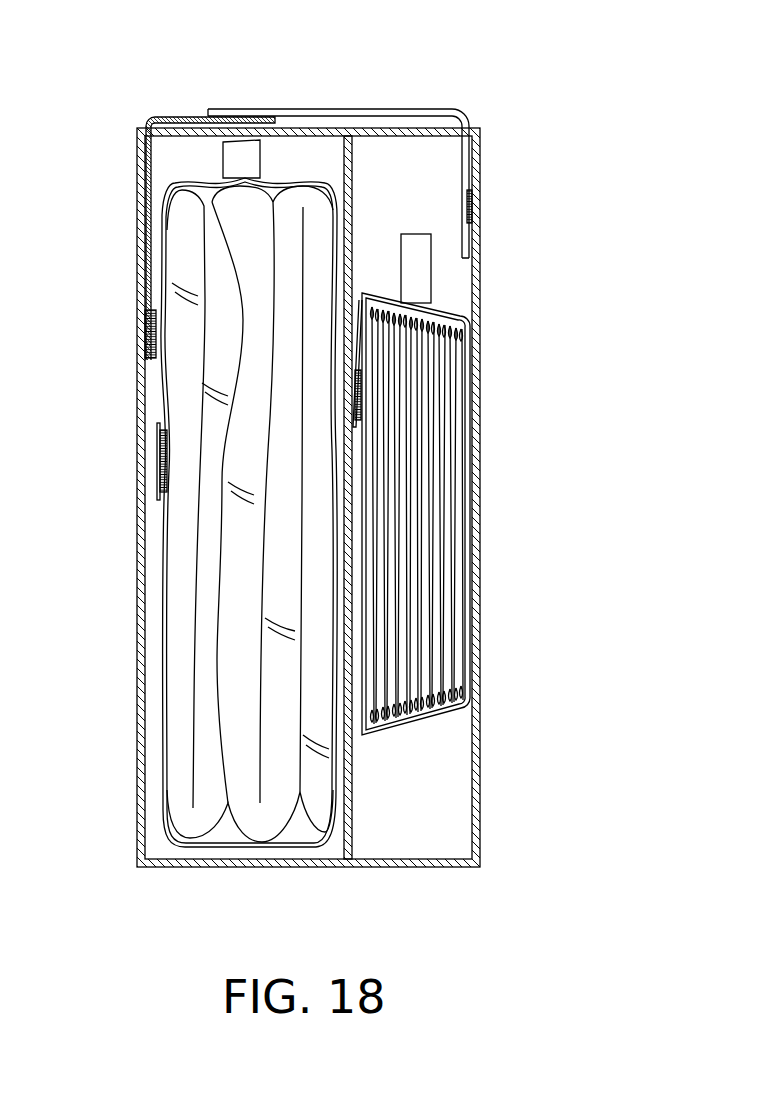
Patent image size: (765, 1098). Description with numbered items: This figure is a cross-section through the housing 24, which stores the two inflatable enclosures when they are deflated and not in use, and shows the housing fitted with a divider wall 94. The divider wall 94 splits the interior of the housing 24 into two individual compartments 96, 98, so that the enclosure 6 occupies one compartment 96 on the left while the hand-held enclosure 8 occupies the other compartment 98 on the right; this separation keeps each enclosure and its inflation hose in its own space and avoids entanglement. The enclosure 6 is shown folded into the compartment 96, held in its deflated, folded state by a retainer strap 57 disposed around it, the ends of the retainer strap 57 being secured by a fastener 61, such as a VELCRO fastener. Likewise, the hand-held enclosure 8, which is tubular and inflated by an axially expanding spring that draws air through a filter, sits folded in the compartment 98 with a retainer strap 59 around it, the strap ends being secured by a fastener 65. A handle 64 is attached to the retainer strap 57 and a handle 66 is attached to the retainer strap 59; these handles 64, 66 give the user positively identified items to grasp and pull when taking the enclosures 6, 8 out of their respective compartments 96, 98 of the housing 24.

The enclosure 6 is at (185, 605).
The enclosure 8 is at (440, 491).
The housing 24 is at (488, 587).
The retainer strap 57 is at (172, 393).
The retainer strap 59 is at (470, 347).
The fastener 61 is at (163, 467).
The handle 64 is at (245, 150).
The fastener 65 is at (360, 397).
The handle 66 is at (413, 250).
The divider wall 94 is at (350, 763).
The compartment 96 is at (315, 157).
The compartment 98 is at (453, 283).